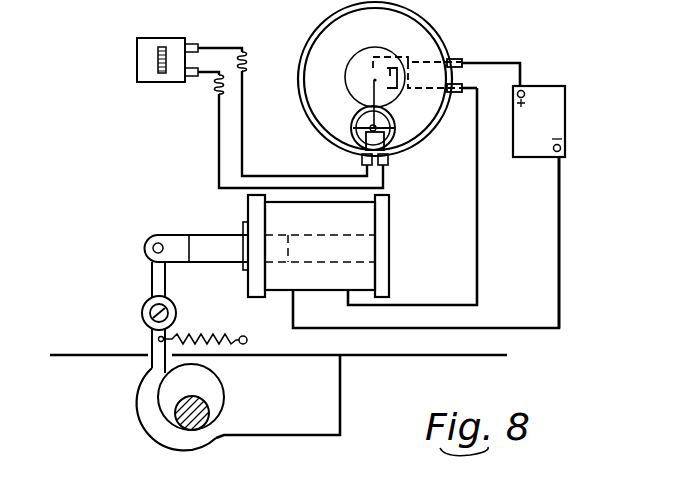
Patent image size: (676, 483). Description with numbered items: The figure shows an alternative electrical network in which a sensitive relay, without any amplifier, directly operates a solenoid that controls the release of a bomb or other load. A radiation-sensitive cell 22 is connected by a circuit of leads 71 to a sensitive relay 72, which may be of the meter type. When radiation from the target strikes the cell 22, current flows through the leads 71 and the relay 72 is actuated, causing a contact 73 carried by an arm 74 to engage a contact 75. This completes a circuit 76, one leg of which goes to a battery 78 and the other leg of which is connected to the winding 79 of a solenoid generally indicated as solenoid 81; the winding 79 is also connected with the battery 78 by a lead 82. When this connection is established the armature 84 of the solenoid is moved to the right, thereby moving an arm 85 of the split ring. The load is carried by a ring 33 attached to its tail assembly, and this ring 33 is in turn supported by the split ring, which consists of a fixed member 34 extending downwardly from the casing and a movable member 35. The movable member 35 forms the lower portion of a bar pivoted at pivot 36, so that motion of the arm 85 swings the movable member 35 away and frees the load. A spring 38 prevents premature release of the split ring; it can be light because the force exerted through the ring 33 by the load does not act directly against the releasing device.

The cell 22 is at (148, 59).
The ring 33 is at (225, 412).
The fixed member 34 is at (210, 397).
The movable member 35 is at (157, 411).
The pivot 36 is at (147, 313).
The spring 38 is at (181, 333).
The circuit leads 71 is at (219, 117).
The sensitive relay 72 is at (299, 54).
The contact 73 is at (372, 80).
The arm 74 is at (373, 97).
The contact 75 is at (386, 83).
The circuit 76 is at (483, 64).
The battery 78 is at (539, 121).
The winding 79 is at (320, 246).
The solenoid 81 is at (276, 295).
The lead 82 is at (559, 244).
The armature 84 is at (197, 248).
The arm 85 is at (160, 283).